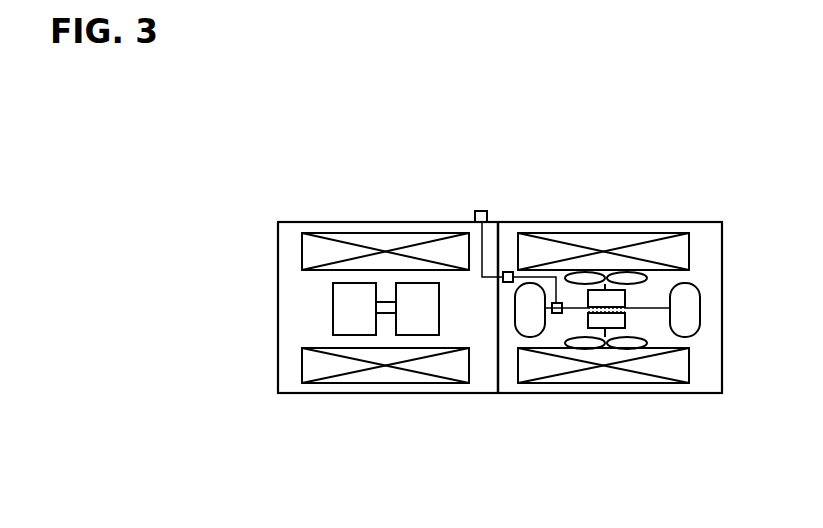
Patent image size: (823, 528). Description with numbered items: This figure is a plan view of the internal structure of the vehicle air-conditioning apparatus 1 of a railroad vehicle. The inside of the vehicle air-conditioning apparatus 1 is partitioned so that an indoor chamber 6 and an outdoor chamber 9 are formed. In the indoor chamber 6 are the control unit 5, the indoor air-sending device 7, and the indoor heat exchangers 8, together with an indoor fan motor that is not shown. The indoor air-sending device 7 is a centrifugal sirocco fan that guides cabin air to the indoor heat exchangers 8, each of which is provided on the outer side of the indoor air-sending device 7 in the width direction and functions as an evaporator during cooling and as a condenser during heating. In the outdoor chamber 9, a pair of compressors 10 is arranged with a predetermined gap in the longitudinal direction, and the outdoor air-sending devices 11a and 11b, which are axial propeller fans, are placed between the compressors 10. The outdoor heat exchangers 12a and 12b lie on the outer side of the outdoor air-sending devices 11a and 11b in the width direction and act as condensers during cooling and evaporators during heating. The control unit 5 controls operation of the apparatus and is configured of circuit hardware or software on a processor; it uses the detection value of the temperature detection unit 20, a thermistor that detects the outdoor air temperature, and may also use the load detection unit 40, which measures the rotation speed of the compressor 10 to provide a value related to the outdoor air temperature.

The vehicle air-conditioning apparatus 1 is at (717, 209).
The control unit 5 is at (510, 270).
The indoor chamber 6 is at (324, 229).
The indoor air-sending device 7 is at (333, 315).
The indoor heat exchanger 8 is at (302, 250).
The outdoor chamber 9 is at (545, 229).
The compressor 10 is at (700, 310).
The outdoor air-sending device 11a is at (648, 343).
The outdoor air-sending device 11b is at (648, 278).
The outdoor heat exchanger 12a is at (690, 370).
The outdoor heat exchanger 12b is at (690, 246).
The temperature detection unit 20 is at (481, 210).
The load detection unit 40 is at (557, 314).